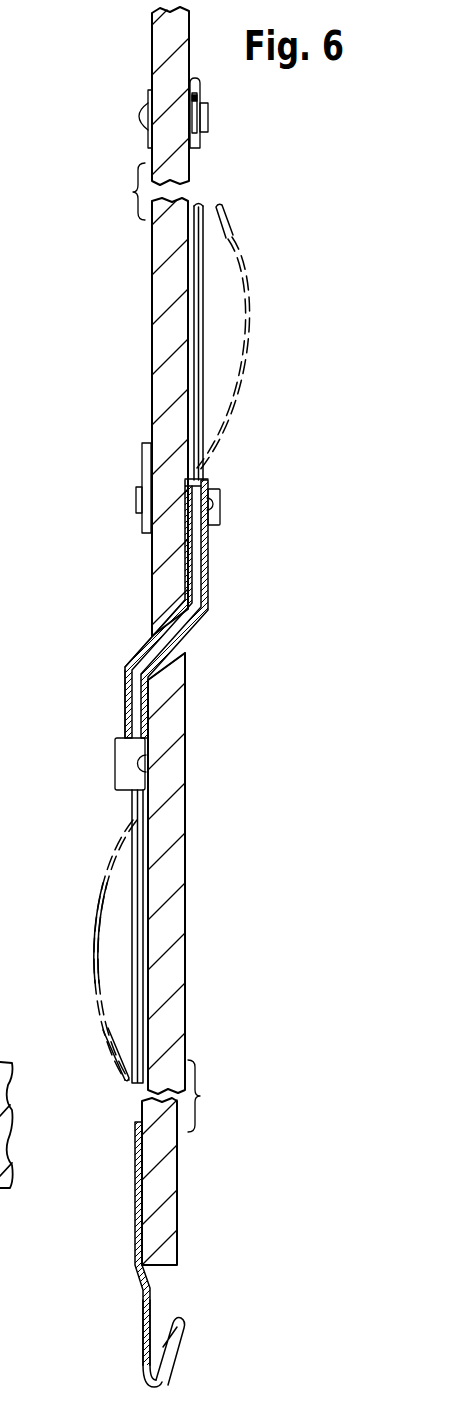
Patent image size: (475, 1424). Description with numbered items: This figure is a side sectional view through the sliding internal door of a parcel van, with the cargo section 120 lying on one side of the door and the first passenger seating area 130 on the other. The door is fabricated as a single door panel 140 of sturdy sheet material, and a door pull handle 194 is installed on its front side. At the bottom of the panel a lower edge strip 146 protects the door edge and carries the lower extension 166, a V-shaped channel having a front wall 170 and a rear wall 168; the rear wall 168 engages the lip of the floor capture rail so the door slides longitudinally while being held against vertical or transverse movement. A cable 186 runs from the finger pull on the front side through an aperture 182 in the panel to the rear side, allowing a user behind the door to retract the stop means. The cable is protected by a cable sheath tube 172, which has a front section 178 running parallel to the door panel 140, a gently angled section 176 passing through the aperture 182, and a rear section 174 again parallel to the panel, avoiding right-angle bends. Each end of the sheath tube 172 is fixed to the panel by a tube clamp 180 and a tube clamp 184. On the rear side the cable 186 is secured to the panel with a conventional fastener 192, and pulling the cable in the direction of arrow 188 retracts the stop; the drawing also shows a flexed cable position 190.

The cargo section 120 is at (289, 425).
The first passenger seating area 130 is at (105, 428).
The door panel 140 is at (186, 871).
The lower edge strip 146 is at (137, 1178).
The lower extension 166 is at (168, 1381).
The rear wall 168 is at (184, 1347).
The front wall 170 is at (142, 1310).
The cable sheath tube 172 is at (210, 586).
The rear section 174 is at (209, 549).
The angled section 176 is at (160, 629).
The front section 178 is at (126, 689).
The tube clamp 180 is at (115, 758).
The aperture 182 is at (166, 675).
The tube clamp 184 is at (221, 503).
The cable 186 is at (203, 320).
The arrow 188 is at (207, 289).
The flexed position of lower strip 190 is at (127, 948).
The fastener 192 is at (140, 113).
The door pull handle 194 is at (140, 467).